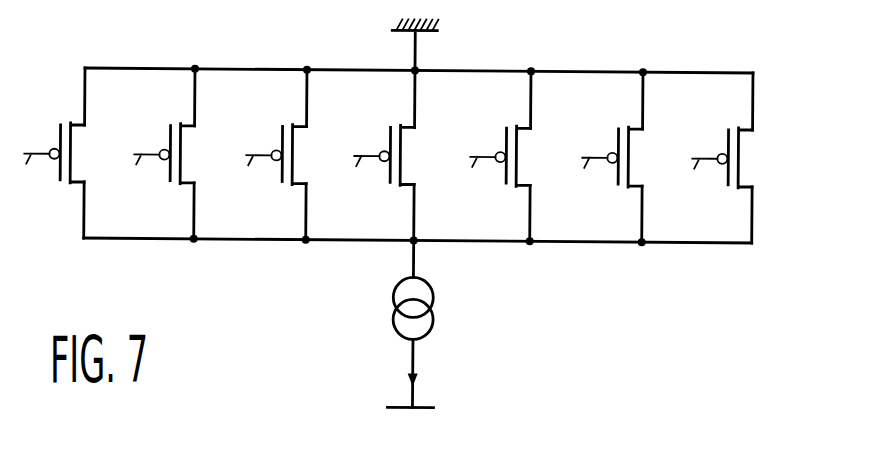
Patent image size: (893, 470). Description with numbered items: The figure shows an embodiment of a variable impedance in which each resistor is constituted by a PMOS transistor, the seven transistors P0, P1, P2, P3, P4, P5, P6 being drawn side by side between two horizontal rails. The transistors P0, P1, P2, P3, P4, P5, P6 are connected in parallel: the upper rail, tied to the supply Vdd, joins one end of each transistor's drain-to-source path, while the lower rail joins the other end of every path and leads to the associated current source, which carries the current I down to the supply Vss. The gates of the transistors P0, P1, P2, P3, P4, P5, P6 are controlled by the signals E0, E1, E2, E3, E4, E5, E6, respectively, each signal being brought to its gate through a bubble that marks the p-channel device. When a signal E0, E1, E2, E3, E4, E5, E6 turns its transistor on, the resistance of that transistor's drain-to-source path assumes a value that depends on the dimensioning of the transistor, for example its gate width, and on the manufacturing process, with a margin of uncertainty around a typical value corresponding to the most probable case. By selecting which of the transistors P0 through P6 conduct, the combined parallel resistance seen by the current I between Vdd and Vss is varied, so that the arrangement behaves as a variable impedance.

The PMOS transistor P0 is at (90, 141).
The PMOS transistor P1 is at (205, 142).
The PMOS transistor P2 is at (317, 142).
The PMOS transistor P3 is at (425, 142).
The PMOS transistor P4 is at (541, 142).
The PMOS transistor P5 is at (653, 142).
The PMOS transistor P6 is at (758, 143).
The control signal E0 is at (27, 179).
The control signal E1 is at (137, 180).
The control signal E2 is at (249, 181).
The control signal E3 is at (357, 182).
The control signal E4 is at (473, 183).
The control signal E5 is at (585, 184).
The control signal E6 is at (695, 184).
The current source current I is at (414, 323).
The positive supply voltage Vdd is at (385, 40).
The negative supply voltage Vss is at (381, 404).